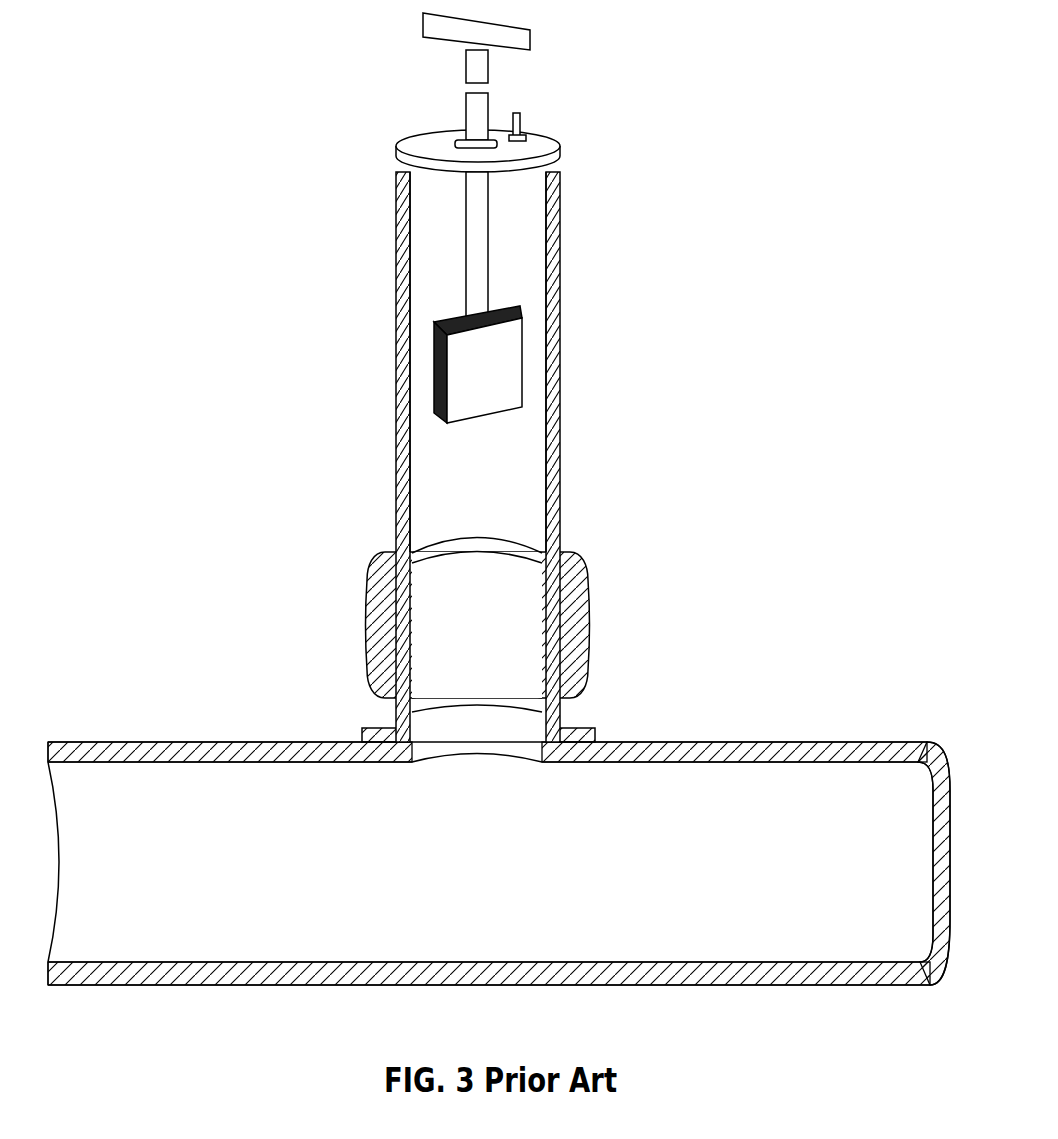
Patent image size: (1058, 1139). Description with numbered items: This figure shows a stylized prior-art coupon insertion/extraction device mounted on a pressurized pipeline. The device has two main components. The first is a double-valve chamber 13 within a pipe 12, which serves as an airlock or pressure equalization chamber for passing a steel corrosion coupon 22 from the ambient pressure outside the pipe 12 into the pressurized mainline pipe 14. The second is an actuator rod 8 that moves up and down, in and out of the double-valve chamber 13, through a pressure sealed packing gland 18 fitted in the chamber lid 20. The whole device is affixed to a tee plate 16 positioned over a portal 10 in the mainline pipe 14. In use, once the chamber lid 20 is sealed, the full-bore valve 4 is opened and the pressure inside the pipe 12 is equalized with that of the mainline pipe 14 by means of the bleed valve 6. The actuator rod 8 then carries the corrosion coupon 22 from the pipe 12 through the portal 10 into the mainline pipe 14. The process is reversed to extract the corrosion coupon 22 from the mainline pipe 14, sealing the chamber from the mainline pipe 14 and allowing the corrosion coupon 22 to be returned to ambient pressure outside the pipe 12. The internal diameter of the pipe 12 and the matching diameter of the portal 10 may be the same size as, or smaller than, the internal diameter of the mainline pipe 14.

The full-bore valve 4 is at (592, 620).
The bleed valve 6 is at (527, 117).
The actuator rod 8 is at (492, 66).
The portal 10 is at (477, 753).
The pipe 12 is at (563, 363).
The double-valve chamber 13 is at (517, 468).
The mainline pipe 14 is at (285, 740).
The tee plate 16 is at (565, 712).
The packing gland 18 is at (462, 132).
The chamber lid 20 is at (394, 158).
The corrosion coupon 22 is at (436, 372).